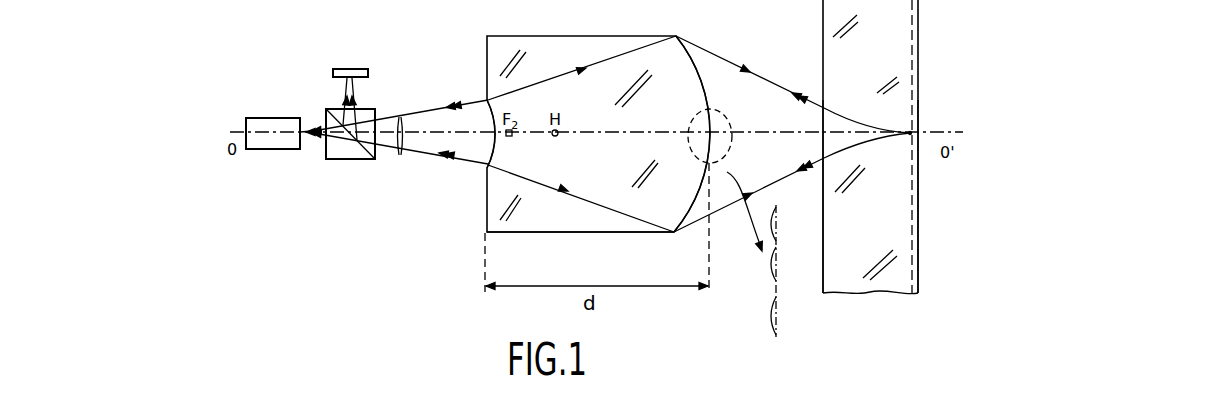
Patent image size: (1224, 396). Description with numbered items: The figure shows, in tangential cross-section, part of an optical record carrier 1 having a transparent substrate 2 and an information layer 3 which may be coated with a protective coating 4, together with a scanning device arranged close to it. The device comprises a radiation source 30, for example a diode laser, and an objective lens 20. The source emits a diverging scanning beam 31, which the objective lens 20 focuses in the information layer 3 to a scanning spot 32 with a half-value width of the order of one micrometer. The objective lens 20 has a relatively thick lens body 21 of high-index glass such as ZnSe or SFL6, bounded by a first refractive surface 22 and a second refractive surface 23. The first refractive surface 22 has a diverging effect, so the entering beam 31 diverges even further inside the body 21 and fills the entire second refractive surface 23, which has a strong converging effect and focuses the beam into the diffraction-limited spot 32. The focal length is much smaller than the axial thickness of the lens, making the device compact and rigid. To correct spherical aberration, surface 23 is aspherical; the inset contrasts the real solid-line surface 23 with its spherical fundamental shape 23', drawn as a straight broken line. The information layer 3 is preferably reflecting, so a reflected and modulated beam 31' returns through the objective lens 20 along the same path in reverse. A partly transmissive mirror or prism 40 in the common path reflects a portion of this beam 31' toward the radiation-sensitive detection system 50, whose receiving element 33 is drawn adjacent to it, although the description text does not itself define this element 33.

The radiation source 30 is at (273, 118).
The scanning beam 31 is at (306, 157).
The partly transmissive mirror or prism 40 is at (349, 160).
The radiation-sensitive detection system 50 is at (347, 69).
The detector surface 33 is at (357, 78).
The reflected and modulated beam 31' is at (399, 152).
The objective lens 20 is at (590, 22).
The first refractive surface 22 is at (490, 147).
The lens body 21 is at (546, 222).
The second refractive surface 23 is at (720, 158).
The spherical fundamental shape 23' is at (791, 271).
The optical record carrier 1 is at (808, 21).
The transparent substrate 2 is at (842, 285).
The information layer 3 is at (906, 282).
The protective coating 4 is at (916, 294).
The scanning spot 32 is at (911, 121).